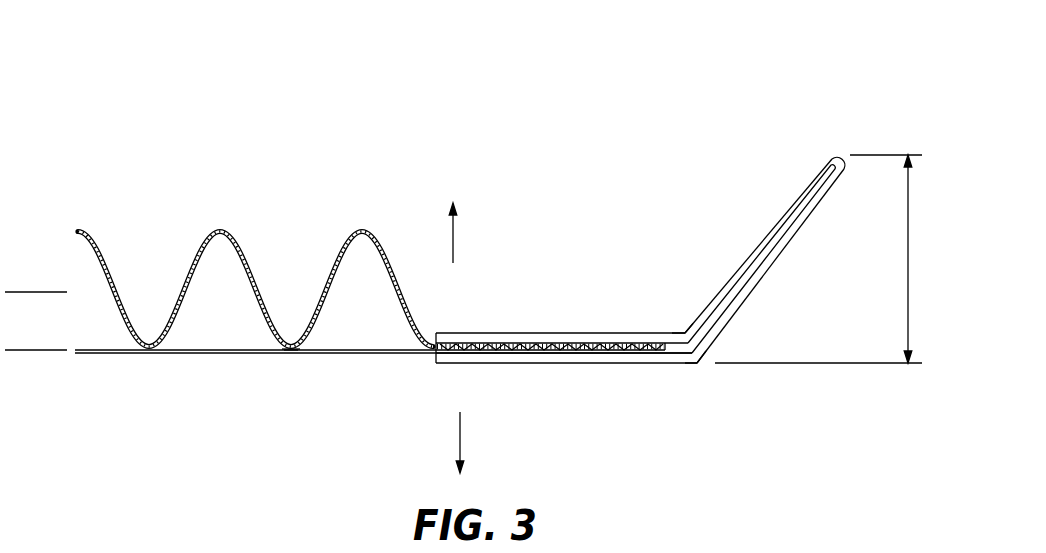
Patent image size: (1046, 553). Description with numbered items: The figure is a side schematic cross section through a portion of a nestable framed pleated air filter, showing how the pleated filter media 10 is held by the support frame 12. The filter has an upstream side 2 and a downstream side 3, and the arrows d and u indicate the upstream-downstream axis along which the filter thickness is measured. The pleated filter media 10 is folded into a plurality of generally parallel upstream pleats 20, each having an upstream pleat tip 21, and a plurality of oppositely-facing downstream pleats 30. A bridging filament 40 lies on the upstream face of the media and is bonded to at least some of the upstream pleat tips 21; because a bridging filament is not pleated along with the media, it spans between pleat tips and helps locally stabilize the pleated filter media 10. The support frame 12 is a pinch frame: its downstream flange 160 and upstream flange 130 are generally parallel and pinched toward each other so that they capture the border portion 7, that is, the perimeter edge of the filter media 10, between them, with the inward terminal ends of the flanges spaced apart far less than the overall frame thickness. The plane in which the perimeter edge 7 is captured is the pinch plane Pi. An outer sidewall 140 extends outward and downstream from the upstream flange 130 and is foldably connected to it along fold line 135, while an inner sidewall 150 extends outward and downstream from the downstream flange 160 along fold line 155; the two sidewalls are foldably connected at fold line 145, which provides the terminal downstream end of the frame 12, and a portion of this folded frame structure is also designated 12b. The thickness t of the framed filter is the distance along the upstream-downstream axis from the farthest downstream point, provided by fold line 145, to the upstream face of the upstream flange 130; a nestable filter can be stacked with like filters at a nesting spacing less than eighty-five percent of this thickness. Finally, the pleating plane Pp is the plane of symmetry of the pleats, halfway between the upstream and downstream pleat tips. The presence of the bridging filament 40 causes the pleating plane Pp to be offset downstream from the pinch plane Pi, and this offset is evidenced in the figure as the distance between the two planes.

The upstream side 2 is at (738, 155).
The downstream side 3 is at (773, 312).
The border portion 7 is at (620, 353).
The pleated filter media 10 is at (177, 168).
The support frame 12 is at (780, 100).
The inner flange layers 12b is at (805, 228).
The upstream pleat 20 is at (288, 368).
The upstream pleat tip 21 is at (292, 353).
The downstream pleat 30 is at (222, 217).
The bridging filament 40 is at (107, 357).
The upstream flange 130 is at (547, 363).
The fold line 135 is at (697, 362).
The outer sidewall 140 is at (778, 262).
The fold line 145 is at (837, 157).
The inner sidewall 150 is at (748, 252).
The fold line 155 is at (683, 332).
The downstream flange 160 is at (543, 333).
The pleating plane Pp is at (33, 292).
The pinch plane Pi is at (33, 350).
The downward direction d is at (455, 242).
The upward direction u is at (460, 438).
The thickness of framed filter t is at (908, 285).